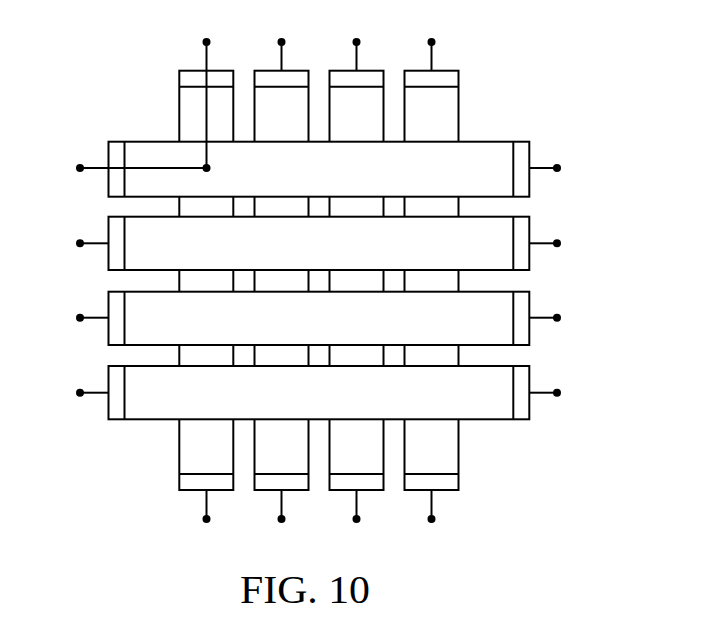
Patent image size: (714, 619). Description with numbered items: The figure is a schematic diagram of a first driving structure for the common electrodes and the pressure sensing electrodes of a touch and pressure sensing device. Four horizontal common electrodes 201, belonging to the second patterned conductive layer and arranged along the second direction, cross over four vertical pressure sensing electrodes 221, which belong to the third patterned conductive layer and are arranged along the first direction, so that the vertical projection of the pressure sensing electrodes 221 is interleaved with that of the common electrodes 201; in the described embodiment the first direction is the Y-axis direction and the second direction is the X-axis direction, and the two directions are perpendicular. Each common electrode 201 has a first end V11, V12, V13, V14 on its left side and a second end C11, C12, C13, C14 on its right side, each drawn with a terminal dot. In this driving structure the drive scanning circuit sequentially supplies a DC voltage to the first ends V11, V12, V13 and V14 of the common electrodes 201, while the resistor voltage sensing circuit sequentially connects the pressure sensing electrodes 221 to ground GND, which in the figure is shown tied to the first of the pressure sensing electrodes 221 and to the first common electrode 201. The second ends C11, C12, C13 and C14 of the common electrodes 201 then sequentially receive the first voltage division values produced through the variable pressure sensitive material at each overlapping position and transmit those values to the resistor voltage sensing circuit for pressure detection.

The pressure sensing electrode 221 is at (448, 96).
The common electrode 201 is at (497, 148).
The ground GND is at (157, 91).
The first end of common electrode V11 is at (70, 168).
The first end of common electrode V12 is at (70, 243).
The first end of common electrode V13 is at (70, 317).
The first end of common electrode V14 is at (70, 392).
The second end of common electrode C11 is at (567, 168).
The second end of common electrode C12 is at (567, 243).
The second end of common electrode C13 is at (567, 317).
The second end of common electrode C14 is at (568, 392).